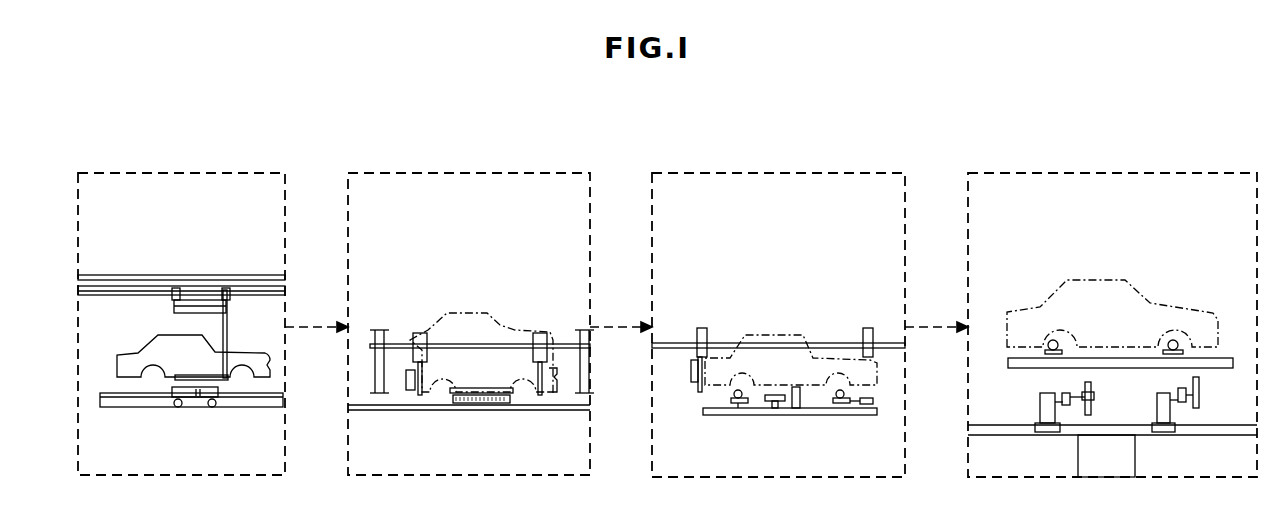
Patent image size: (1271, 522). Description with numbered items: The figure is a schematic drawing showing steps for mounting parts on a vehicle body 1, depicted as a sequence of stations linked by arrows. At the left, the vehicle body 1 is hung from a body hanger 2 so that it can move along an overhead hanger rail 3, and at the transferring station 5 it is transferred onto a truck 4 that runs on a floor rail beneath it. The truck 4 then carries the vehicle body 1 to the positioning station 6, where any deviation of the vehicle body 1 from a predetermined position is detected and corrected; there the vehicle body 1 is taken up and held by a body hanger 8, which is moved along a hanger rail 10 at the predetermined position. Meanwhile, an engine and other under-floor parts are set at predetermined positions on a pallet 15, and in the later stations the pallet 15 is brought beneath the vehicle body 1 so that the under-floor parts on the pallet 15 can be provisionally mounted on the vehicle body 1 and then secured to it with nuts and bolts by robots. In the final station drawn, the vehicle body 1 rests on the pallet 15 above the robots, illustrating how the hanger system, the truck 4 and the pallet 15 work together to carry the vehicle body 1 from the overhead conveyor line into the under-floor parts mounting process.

The vehicle body 1 is at (165, 338).
The body hanger 2 is at (231, 334).
The overhead hanger rail 3 is at (246, 290).
The truck 4 is at (197, 408).
The transferring station 5 is at (196, 478).
The positioning station 6 is at (470, 478).
The body hanger 8 is at (545, 333).
The hanger rail 10 is at (793, 479).
The pallet 15 is at (712, 414).